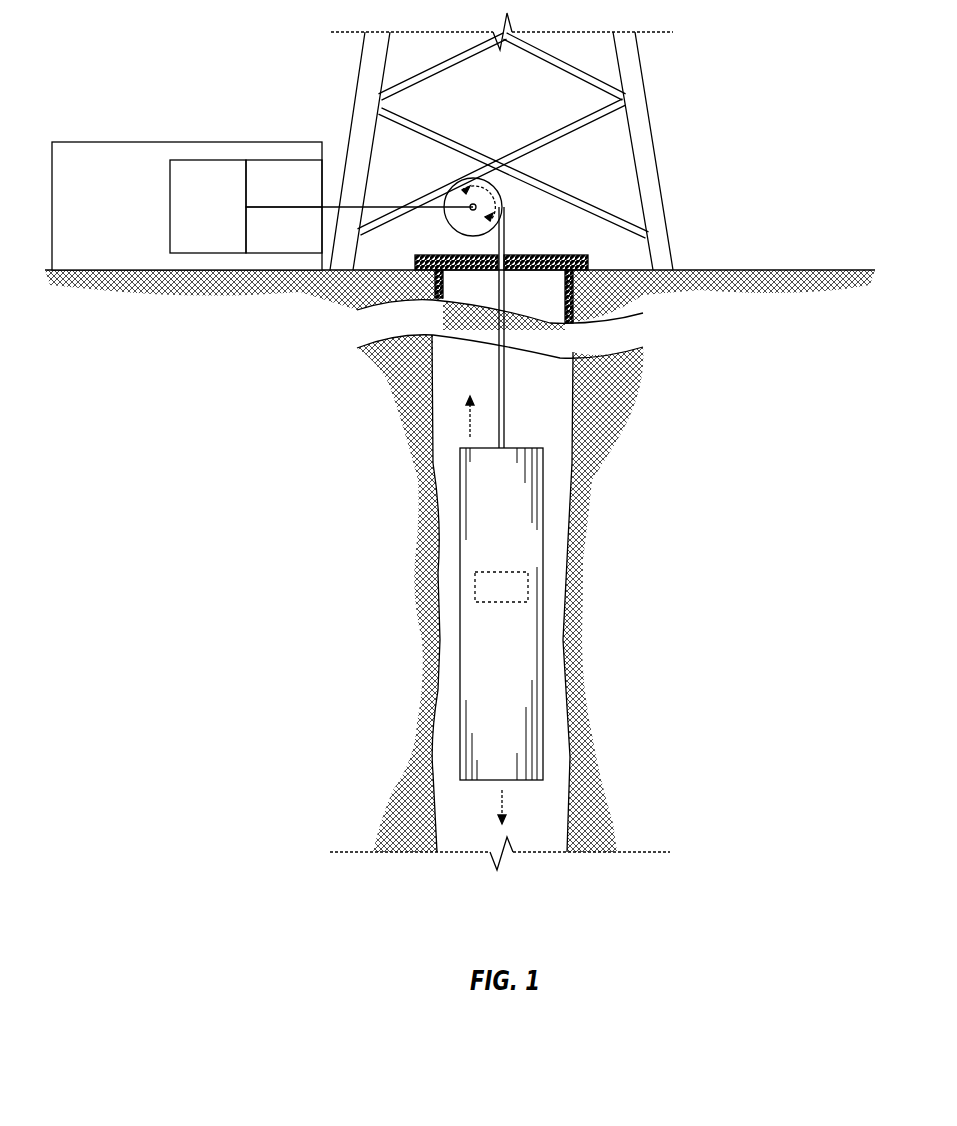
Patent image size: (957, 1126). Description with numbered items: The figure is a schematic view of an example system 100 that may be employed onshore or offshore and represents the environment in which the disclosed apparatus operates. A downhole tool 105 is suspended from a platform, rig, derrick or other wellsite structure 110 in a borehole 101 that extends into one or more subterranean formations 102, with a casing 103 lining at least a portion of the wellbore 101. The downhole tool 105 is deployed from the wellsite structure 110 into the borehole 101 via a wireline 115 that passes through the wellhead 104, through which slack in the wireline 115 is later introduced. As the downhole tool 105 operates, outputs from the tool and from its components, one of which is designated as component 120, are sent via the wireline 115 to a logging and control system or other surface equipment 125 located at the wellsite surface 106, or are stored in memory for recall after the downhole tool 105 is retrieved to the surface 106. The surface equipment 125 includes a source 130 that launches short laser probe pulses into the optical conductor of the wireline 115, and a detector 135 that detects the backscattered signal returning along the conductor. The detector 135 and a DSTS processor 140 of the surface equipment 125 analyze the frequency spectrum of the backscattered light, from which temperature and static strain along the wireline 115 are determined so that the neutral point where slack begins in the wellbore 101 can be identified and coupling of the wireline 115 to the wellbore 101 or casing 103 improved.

The system 100 is at (742, 185).
The borehole 101 is at (533, 833).
The subterranean formations 102 is at (618, 406).
The casing 103 is at (565, 295).
The wellhead 104 is at (467, 254).
The downhole tool 105 is at (520, 445).
The wellsite surface 106 is at (810, 270).
The wellsite structure 110 is at (655, 140).
The wireline 115 is at (507, 249).
The component of the downhole tool 120 is at (513, 604).
The surface equipment 125 is at (186, 142).
The source 130 is at (300, 199).
The detector 135 is at (300, 244).
The DSTS processor 140 is at (225, 221).